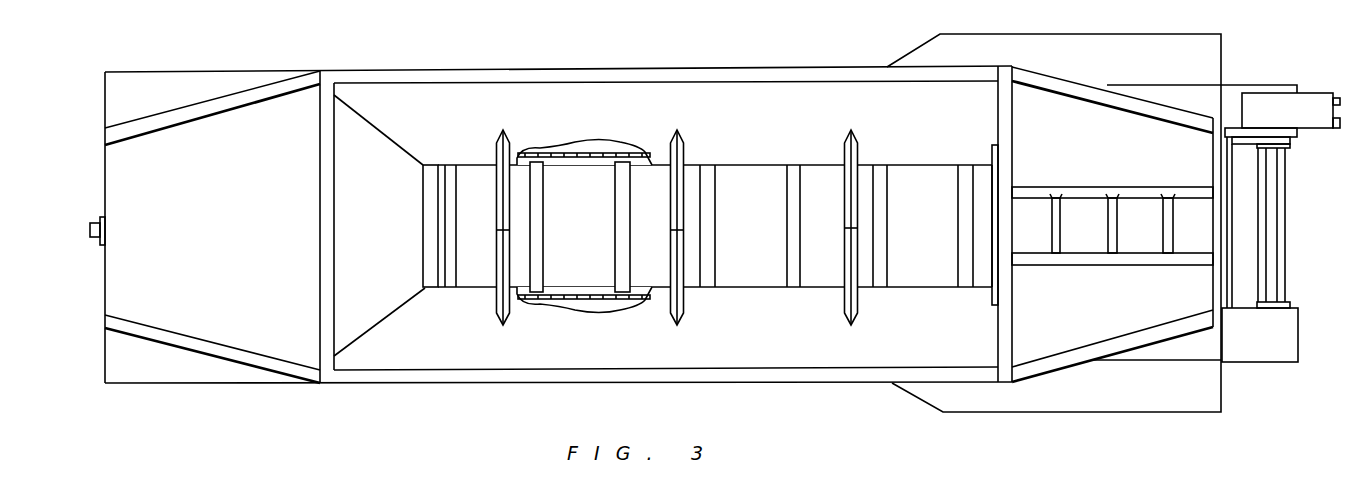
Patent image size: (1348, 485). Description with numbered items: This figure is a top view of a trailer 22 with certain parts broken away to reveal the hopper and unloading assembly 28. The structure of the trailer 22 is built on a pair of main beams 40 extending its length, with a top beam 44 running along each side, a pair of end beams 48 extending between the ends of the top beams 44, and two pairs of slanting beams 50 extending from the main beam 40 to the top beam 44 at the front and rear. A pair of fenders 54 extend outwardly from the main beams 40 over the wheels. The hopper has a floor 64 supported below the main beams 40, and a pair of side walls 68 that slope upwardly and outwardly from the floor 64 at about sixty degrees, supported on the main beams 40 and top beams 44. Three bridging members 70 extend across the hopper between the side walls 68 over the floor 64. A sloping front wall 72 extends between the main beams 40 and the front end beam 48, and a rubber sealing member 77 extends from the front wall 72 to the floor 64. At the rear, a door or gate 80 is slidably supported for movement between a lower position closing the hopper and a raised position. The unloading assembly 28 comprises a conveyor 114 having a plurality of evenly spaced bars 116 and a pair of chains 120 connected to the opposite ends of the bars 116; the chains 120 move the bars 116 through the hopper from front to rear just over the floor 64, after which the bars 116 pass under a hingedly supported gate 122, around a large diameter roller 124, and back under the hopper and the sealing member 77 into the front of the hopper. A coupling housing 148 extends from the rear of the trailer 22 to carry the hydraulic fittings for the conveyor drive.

The trailer 22 is at (364, 396).
The unloading assembly 28 is at (767, 294).
The main beams 40 is at (168, 375).
The top beam 44 is at (533, 78).
The end beams 48 is at (333, 210).
The slanting beams 50 is at (221, 106).
The fenders 54 is at (1117, 45).
The floor 64 is at (766, 261).
The side walls 68 is at (417, 98).
The bridging members 70 is at (502, 292).
The front wall 72 is at (388, 306).
The rubber sealing member 77 is at (430, 262).
The door or gate 80 is at (992, 290).
The conveyor 114 is at (745, 173).
The bars 116 is at (452, 195).
The chains 120 is at (572, 158).
The gate 122 is at (1243, 295).
The roller 124 is at (1283, 180).
The coupling housing 148 is at (1313, 100).